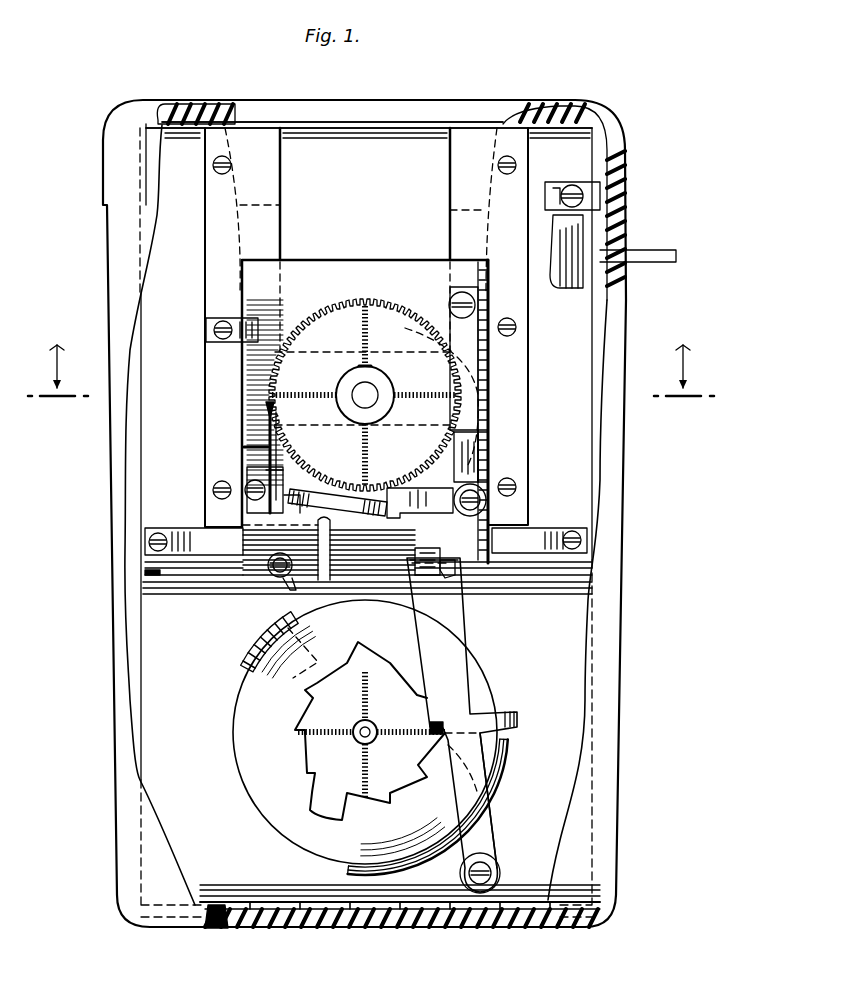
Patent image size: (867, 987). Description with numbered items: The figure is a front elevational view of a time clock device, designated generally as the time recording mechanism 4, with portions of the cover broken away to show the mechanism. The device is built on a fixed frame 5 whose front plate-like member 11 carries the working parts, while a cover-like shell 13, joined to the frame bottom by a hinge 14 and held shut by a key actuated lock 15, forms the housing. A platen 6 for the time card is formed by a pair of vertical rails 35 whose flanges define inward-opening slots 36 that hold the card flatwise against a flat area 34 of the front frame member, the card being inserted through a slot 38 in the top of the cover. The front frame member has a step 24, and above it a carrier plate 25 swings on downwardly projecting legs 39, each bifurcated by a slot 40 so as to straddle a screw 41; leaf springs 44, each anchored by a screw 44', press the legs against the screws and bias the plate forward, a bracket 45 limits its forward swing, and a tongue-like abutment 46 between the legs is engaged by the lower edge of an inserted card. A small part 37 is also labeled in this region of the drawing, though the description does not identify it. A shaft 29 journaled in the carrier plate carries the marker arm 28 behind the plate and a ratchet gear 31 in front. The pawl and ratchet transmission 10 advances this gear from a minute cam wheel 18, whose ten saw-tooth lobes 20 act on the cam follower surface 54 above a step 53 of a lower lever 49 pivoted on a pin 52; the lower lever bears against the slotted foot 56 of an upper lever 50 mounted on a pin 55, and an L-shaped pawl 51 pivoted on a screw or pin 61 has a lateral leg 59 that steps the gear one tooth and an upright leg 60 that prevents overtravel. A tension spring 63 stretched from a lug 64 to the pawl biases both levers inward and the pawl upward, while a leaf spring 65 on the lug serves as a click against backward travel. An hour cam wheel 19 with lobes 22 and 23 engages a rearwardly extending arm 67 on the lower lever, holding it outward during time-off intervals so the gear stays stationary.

The time recording mechanism 4 is at (528, 90).
The fixed frame 5 is at (155, 672).
The platen 6 is at (381, 152).
The pawl and ratchet transmission 10 is at (490, 647).
The front plate-like member 11 is at (178, 368).
The cover-like shell 13 is at (615, 575).
The hinge 14 is at (430, 912).
The key actuated lock 15 is at (600, 283).
The minute cam wheel 18 is at (312, 745).
The hour cam wheel 19 is at (270, 796).
The lobes 20 is at (347, 665).
The lobe 22 is at (256, 645).
The lobe 23 is at (505, 792).
The step 24 is at (148, 572).
The carrier plate 25 is at (372, 278).
The arm 28 is at (410, 343).
The shaft 29 is at (355, 390).
The ratchet gear 31 is at (342, 315).
The flat area 34 is at (372, 212).
The rails 35 is at (255, 150).
The slots 36 is at (270, 205).
The stop 37 is at (413, 566).
The slot 38 is at (330, 118).
The legs 39 is at (255, 543).
The slot 40 is at (275, 578).
The screw 41 is at (286, 582).
The leaf springs 44 is at (366, 521).
The screw 44' is at (369, 519).
The bracket 45 is at (250, 318).
The tongue-like abutment 46 is at (332, 528).
The lower lever 49 is at (458, 690).
The upper lever 50 is at (495, 393).
The pawl 51 is at (480, 470).
The pin 52 is at (501, 868).
The step 53 is at (470, 762).
The cam follower surface 54 is at (430, 724).
The pin 55 is at (476, 305).
The foot 56 is at (448, 580).
The leg 59 is at (412, 490).
The leg 60 is at (463, 447).
The screw or pin 61 is at (484, 504).
The tension spring 63 is at (345, 492).
The lug 64 is at (260, 521).
The leaf spring 65 is at (262, 447).
The arm 67 is at (520, 716).